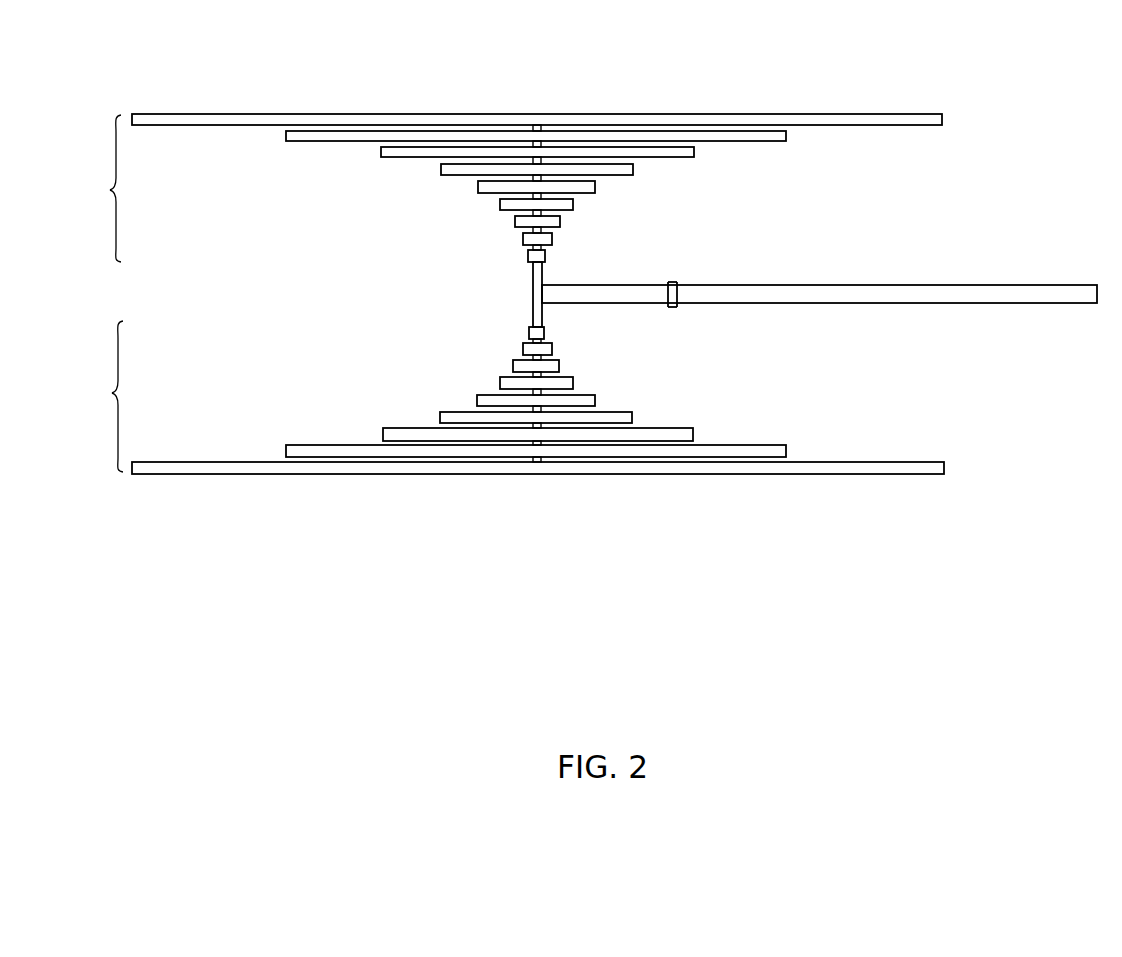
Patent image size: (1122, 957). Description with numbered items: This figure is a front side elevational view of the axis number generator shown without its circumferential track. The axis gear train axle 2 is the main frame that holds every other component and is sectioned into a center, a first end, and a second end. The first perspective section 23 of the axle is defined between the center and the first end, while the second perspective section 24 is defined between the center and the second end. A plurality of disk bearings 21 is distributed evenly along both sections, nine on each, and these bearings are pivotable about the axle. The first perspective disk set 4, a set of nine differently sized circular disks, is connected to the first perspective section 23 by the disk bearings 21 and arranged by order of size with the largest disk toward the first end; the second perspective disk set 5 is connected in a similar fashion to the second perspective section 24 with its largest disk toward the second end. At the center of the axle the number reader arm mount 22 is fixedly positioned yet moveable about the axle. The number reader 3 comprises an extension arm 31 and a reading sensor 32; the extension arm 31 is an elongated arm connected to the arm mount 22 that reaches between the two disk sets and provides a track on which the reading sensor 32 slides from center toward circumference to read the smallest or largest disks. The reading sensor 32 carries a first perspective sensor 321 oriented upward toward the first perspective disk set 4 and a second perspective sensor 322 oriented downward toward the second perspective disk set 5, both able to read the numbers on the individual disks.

The axis gear train axle 2 is at (536, 293).
The disk bearings 21 is at (533, 128).
The number reader arm mount 22 is at (537, 278).
The first perspective section 23 is at (104, 188).
The second perspective section 24 is at (104, 396).
The number reader 3 is at (819, 277).
The extension arm 31 is at (902, 293).
The reading sensor 32 is at (684, 298).
The first perspective sensor 321 is at (673, 282).
The second perspective sensor 322 is at (672, 307).
The first perspective disk set 4 is at (278, 124).
The second perspective disk set 5 is at (268, 462).